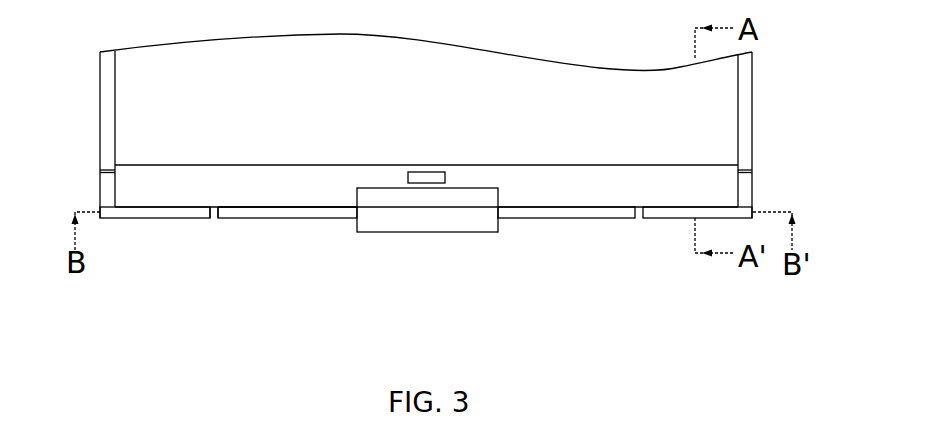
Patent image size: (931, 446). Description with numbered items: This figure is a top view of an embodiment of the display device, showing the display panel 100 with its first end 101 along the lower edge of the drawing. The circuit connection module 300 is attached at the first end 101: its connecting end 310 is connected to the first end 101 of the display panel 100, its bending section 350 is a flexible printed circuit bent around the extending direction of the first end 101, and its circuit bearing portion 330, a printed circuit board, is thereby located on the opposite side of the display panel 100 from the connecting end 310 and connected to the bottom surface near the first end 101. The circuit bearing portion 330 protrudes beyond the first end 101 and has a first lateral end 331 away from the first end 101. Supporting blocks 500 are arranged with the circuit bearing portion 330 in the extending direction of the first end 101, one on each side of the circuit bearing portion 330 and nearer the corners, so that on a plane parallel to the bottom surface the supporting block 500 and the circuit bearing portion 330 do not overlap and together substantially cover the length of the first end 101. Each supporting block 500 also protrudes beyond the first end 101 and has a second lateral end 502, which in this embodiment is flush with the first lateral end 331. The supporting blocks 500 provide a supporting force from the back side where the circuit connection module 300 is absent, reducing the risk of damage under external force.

The display panel 100 is at (237, 132).
The first end 101 is at (327, 207).
The circuit connection module 300 is at (426, 255).
The connecting end 310 is at (403, 188).
The circuit bearing portion 330 is at (566, 255).
The first lateral end 331 is at (257, 218).
The bending section 350 is at (458, 232).
The supporting block 500 is at (155, 209).
The second lateral end 502 is at (183, 220).